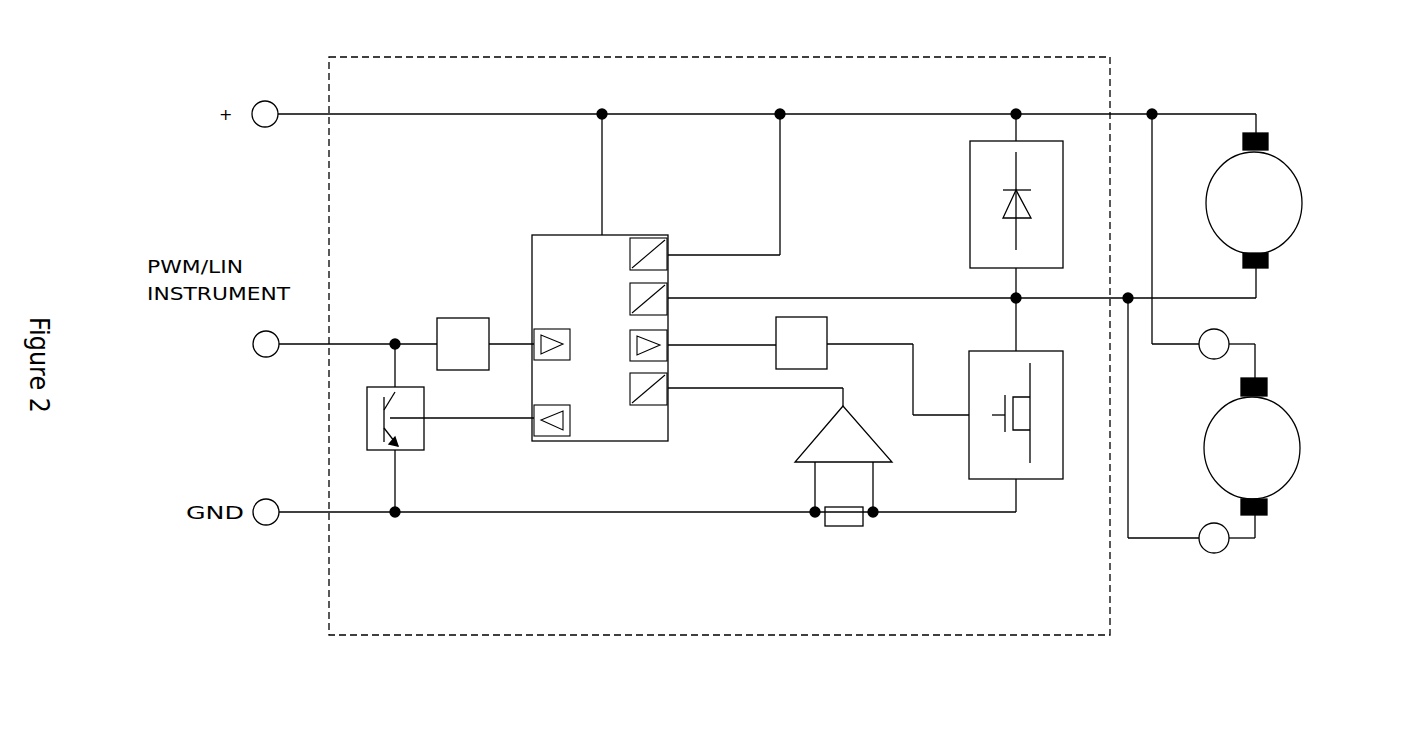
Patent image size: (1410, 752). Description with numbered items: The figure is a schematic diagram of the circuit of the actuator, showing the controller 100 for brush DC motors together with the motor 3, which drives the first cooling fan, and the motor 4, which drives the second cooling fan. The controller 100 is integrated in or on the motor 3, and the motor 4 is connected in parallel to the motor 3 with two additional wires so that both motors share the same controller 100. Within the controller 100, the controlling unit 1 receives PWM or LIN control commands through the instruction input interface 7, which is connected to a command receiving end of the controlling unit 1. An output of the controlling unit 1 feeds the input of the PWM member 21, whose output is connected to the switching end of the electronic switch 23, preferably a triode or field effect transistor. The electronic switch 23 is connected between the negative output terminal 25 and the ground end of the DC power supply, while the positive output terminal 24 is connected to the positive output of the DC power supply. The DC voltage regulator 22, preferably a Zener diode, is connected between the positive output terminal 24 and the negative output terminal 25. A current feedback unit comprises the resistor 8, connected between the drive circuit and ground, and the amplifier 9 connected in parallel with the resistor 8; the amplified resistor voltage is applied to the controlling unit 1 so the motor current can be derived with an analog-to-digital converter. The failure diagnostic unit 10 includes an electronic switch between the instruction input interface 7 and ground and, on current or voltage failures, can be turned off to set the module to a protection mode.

The controlling unit 1 is at (600, 441).
The motor 3 is at (1302, 215).
The motor 4 is at (1300, 462).
The instruction input interface 7 is at (470, 318).
The resistor 8 is at (845, 527).
The amplifier 9 is at (812, 425).
The failure diagnostic unit 10 is at (424, 440).
The PWM member 21 is at (827, 340).
The DC voltage regulator 22 is at (970, 205).
The electronic switch 23 is at (1035, 479).
The positive output terminal 24 is at (1017, 113).
The negative output terminal 25 is at (1017, 297).
The controller 100 is at (813, 635).